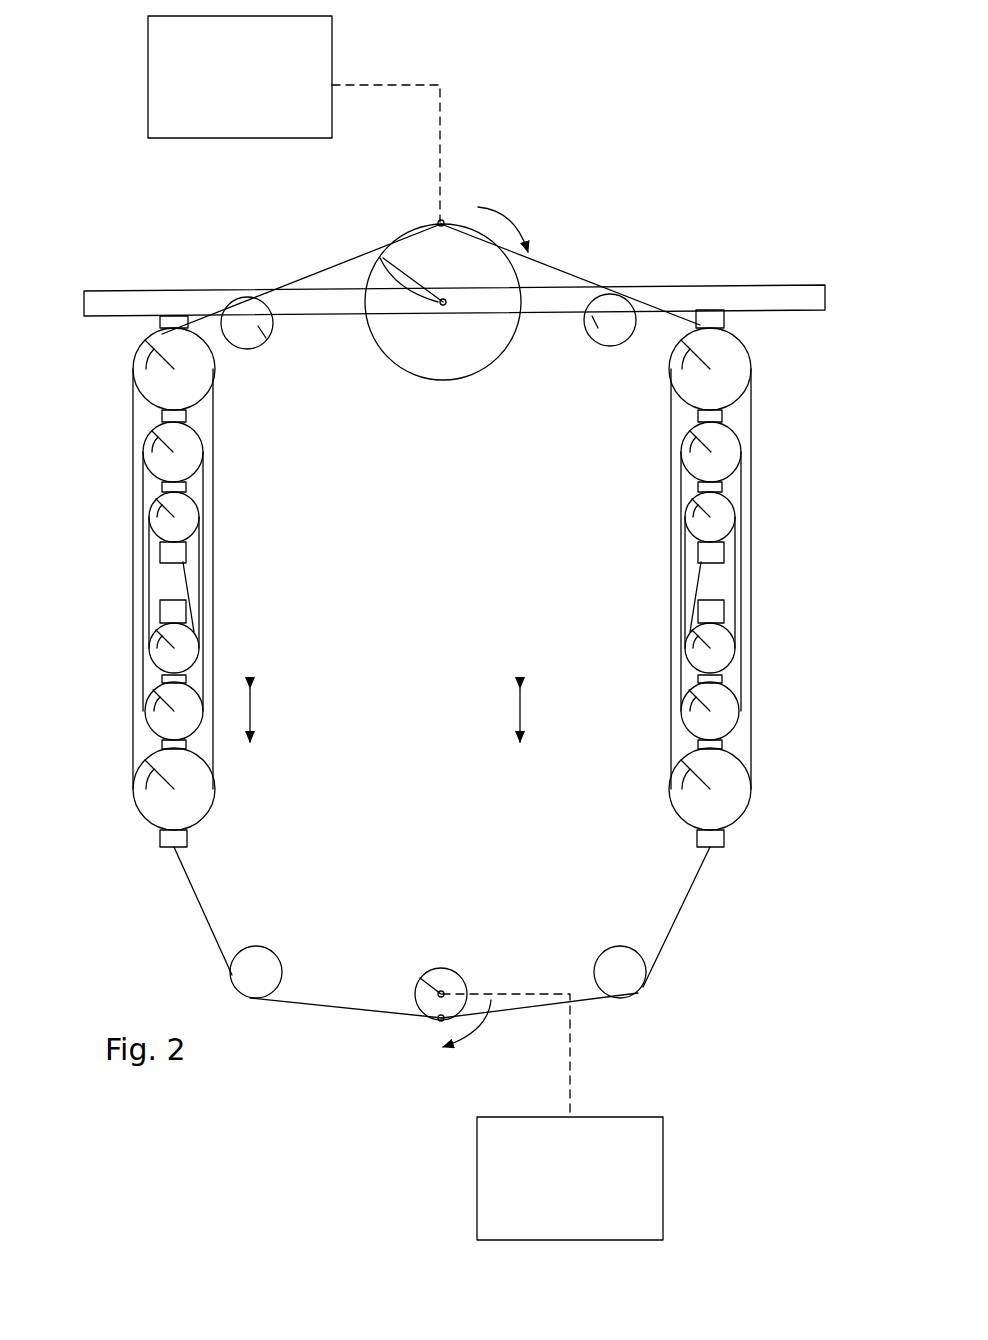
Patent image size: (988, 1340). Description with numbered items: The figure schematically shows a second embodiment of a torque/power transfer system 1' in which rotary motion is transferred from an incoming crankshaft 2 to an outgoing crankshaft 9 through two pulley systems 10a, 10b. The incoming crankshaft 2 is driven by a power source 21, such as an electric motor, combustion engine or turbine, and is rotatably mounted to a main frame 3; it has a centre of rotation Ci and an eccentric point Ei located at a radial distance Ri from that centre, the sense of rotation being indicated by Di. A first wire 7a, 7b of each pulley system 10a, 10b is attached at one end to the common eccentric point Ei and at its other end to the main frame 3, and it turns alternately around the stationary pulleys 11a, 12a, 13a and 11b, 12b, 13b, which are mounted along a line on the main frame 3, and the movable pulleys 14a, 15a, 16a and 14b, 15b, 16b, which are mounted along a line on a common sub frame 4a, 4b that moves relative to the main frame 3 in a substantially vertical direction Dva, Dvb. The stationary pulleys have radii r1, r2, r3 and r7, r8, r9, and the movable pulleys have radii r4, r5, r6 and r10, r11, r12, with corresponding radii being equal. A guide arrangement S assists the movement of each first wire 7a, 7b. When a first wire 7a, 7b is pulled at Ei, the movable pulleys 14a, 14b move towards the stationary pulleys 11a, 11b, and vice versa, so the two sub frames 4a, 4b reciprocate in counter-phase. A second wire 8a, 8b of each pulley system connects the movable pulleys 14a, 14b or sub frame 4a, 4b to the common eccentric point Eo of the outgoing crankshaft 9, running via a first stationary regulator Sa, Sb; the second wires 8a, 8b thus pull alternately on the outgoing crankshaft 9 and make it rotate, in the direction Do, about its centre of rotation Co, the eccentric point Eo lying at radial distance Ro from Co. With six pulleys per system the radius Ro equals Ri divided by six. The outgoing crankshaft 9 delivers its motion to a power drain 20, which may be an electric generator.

The torque/power transfer system 1' is at (731, 131).
The incoming crankshaft 2 is at (500, 360).
The main frame 3 is at (110, 318).
The sub frame 4a is at (165, 602).
The sub frame 4b is at (700, 602).
The first wire 7a is at (245, 284).
The first wire 7b is at (565, 268).
The second wire 8a is at (232, 962).
The second wire 8b is at (667, 937).
The outgoing crankshaft 9 is at (422, 986).
The pulley system 10a is at (150, 878).
The pulley system 10b is at (746, 855).
The stationary pulley 11a is at (150, 412).
The stationary pulley 11b is at (690, 410).
The stationary pulley 12a is at (150, 484).
The stationary pulley 12b is at (690, 484).
The stationary pulley 13a is at (160, 550).
The stationary pulley 13b is at (695, 550).
The movable pulley 14a is at (160, 826).
The movable pulley 14b is at (695, 826).
The movable pulley 15a is at (155, 746).
The movable pulley 15b is at (690, 746).
The movable pulley 16a is at (160, 676).
The movable pulley 16b is at (690, 676).
The power drain 20 is at (586, 1191).
The power source 21 is at (256, 90).
The radius of stationary pulley r1 is at (131, 377).
The radius of stationary pulley r2 is at (140, 453).
The radius of stationary pulley r3 is at (150, 520).
The radius of movable pulley r4 is at (134, 790).
The radius of movable pulley r5 is at (145, 711).
The radius of movable pulley r6 is at (150, 649).
The radius of stationary pulley r7 is at (668, 377).
The radius of stationary pulley r8 is at (681, 453).
The radius of stationary pulley r9 is at (686, 520).
The radius of movable pulley r10 is at (670, 790).
The radius of movable pulley r11 is at (683, 711).
The radius of movable pulley r12 is at (686, 649).
The guide arrangement S is at (262, 332).
The first stationary regulator Sa is at (250, 976).
The first stationary regulator Sb is at (630, 976).
The radial distance Ri is at (443, 302).
The centre of rotation Ci is at (443, 302).
The eccentric point Ei is at (441, 223).
The direction of rotation Di is at (505, 222).
The radial distance Ro is at (441, 993).
The centre of rotation Co is at (440, 994).
The eccentric point Eo is at (441, 1021).
The direction of rotation Do is at (480, 1023).
The vertical direction Dva is at (278, 715).
The vertical direction Dvb is at (493, 715).